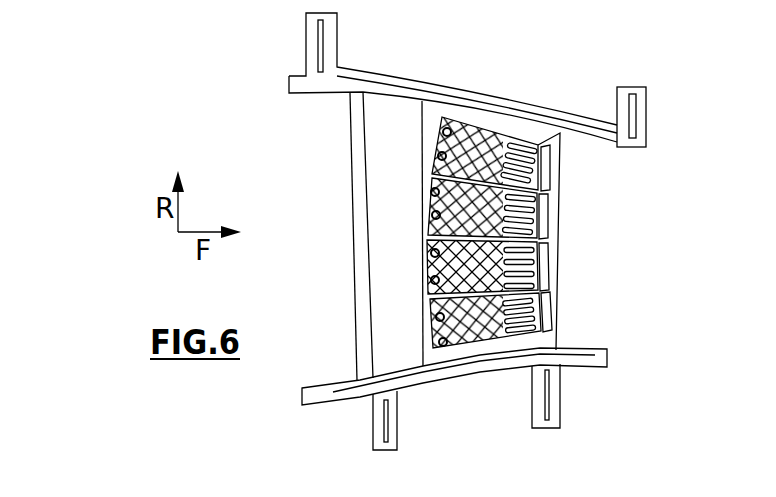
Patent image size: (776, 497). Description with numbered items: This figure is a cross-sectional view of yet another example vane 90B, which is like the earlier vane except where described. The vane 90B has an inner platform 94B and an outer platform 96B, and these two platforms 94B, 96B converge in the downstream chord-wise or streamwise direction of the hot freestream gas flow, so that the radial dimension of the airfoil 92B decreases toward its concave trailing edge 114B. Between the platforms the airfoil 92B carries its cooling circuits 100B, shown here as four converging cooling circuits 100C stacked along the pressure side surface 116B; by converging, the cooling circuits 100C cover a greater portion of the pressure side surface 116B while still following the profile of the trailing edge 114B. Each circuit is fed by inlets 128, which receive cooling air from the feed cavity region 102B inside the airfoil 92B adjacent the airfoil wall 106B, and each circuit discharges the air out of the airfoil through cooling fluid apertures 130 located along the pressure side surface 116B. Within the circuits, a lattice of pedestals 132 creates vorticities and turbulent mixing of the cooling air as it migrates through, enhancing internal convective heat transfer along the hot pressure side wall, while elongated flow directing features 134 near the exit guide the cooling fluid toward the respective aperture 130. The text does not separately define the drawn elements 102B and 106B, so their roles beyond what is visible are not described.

The vane 90B is at (606, 43).
The airfoil 92B is at (352, 264).
The inner platform 94B is at (312, 392).
The outer platform 96B is at (307, 95).
The cooling circuits 100B is at (632, 166).
The converging cooling circuits 100C is at (568, 188).
The cavity 102B is at (384, 200).
The airfoil wall 106B is at (355, 315).
The trailing edge 114B is at (554, 344).
The pressure side surface 116B is at (563, 352).
The inlets 128 is at (442, 153).
The cooling fluid apertures 130 is at (545, 161).
The pedestals 132 is at (463, 148).
The elongated flow directing features 134 is at (522, 160).